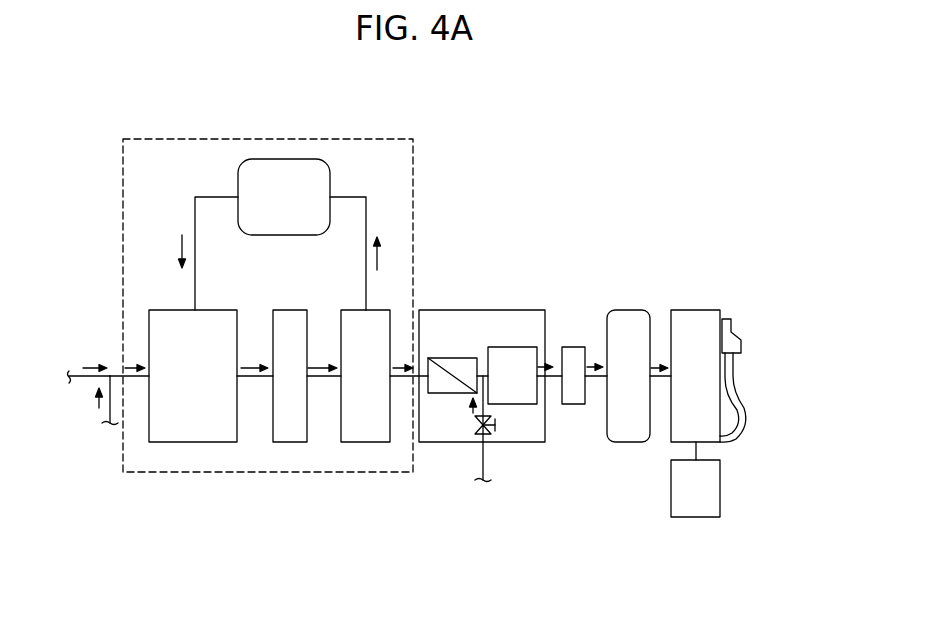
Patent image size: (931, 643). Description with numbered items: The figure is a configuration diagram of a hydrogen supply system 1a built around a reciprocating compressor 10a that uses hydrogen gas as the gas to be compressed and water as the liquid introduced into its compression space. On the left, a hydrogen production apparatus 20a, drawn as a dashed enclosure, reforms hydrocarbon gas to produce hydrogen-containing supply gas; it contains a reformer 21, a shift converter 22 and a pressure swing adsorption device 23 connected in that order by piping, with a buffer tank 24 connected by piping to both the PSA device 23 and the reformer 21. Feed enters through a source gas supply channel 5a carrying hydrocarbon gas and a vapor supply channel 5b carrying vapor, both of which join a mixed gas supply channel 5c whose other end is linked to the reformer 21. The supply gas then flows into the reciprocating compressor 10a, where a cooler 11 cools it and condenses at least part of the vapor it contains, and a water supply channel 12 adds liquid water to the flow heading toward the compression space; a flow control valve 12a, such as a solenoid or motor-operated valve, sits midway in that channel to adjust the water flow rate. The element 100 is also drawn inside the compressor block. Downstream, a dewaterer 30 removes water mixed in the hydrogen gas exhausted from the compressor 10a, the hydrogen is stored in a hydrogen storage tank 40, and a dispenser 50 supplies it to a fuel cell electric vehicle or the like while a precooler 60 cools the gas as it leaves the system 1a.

The hydrogen supply system 1a is at (651, 132).
The source gas supply channel 5a is at (80, 375).
The vapor supply channel 5b is at (112, 397).
The mixed gas supply channel 5c is at (118, 375).
The reciprocating compressor 10a is at (485, 310).
The cooler 11 is at (452, 365).
The water supply channel 12 is at (478, 438).
The flow control valve 12a is at (497, 424).
The hydrogen production apparatus 20a is at (344, 139).
The reformer 21 is at (193, 424).
The shift converter 22 is at (287, 424).
The pressure swing adsorption (PSA) device 23 is at (364, 424).
The buffer tank 24 is at (273, 178).
The dewaterer 30 is at (573, 358).
The hydrogen storage tank 40 is at (628, 322).
The dispenser 50 is at (695, 322).
The precooler 60 is at (706, 492).
The hydrogen filter 100 is at (520, 358).